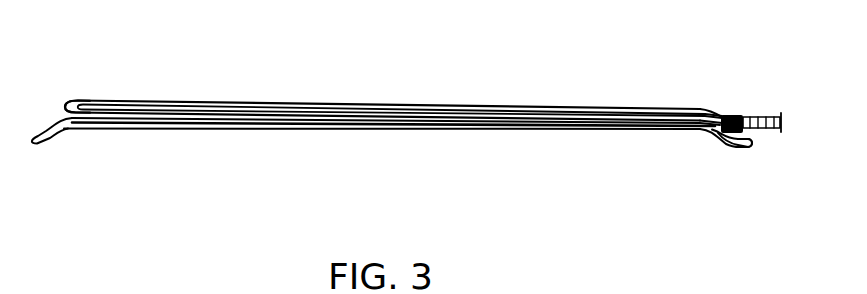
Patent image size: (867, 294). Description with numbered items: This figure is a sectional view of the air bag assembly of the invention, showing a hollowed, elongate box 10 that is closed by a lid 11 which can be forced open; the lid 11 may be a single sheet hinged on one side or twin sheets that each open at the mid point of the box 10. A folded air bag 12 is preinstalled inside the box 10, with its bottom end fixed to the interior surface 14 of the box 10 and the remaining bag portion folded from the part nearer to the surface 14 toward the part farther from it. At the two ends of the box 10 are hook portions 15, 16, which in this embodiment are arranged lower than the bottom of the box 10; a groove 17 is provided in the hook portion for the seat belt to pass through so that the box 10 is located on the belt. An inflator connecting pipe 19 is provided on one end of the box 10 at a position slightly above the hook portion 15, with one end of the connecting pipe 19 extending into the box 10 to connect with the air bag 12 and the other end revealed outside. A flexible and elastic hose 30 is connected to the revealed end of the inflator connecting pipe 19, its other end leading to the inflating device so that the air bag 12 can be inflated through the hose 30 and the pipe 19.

The box 10 is at (385, 131).
The lid 11 is at (437, 107).
The air bag 12 is at (503, 110).
The interior surface 14 is at (70, 107).
The hook portion 15 is at (732, 150).
The hook portion 16 is at (35, 143).
The groove 17 is at (117, 131).
The inflator connecting pipe 19 is at (732, 115).
The flexible and elastic hose 30 is at (767, 117).